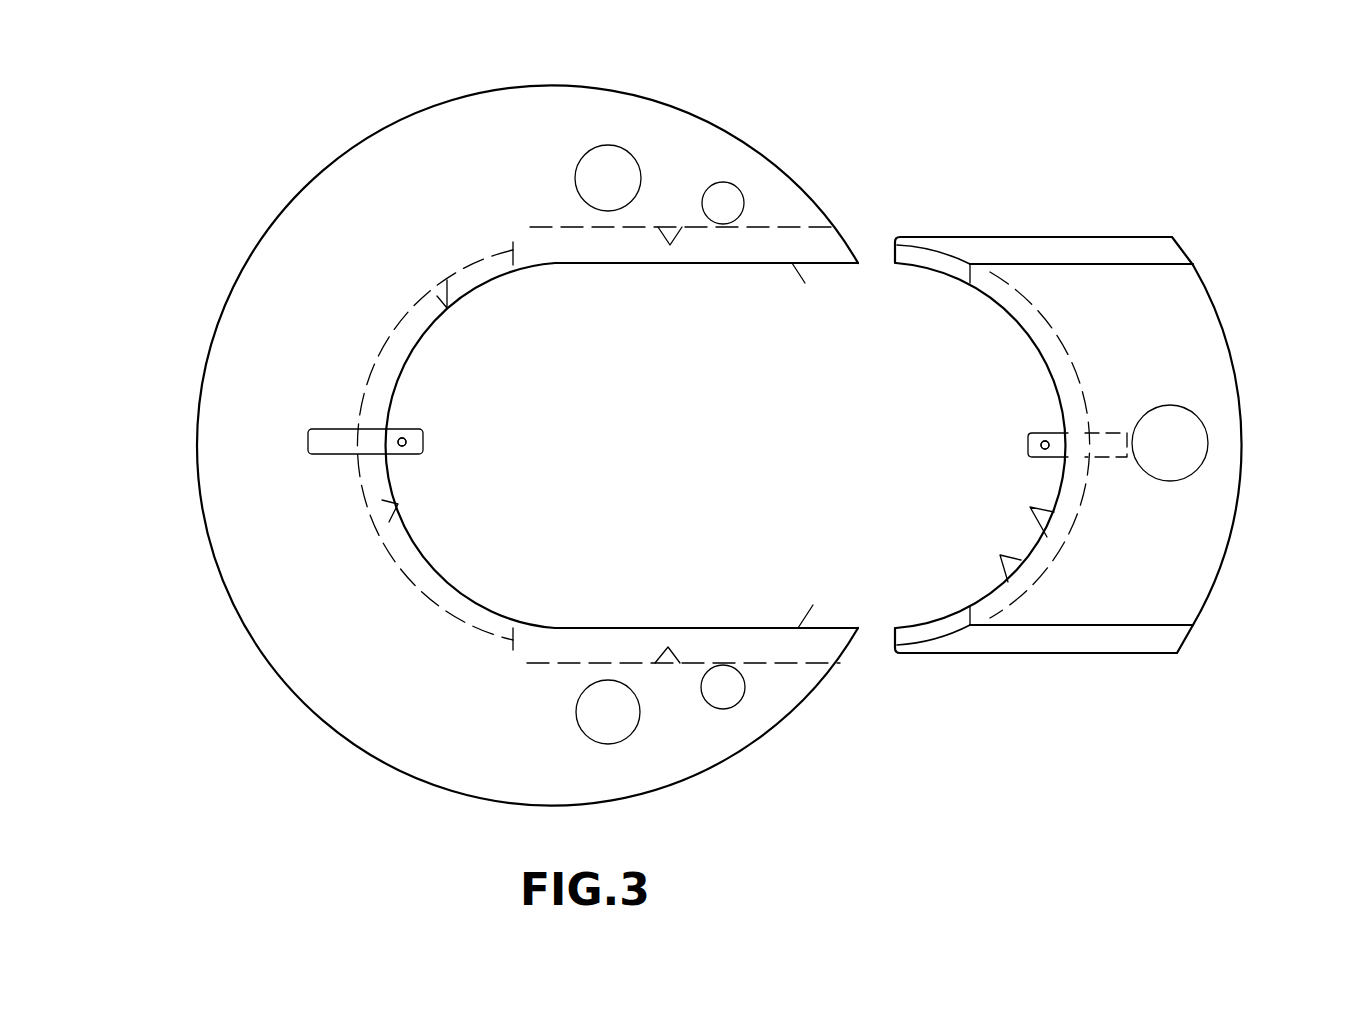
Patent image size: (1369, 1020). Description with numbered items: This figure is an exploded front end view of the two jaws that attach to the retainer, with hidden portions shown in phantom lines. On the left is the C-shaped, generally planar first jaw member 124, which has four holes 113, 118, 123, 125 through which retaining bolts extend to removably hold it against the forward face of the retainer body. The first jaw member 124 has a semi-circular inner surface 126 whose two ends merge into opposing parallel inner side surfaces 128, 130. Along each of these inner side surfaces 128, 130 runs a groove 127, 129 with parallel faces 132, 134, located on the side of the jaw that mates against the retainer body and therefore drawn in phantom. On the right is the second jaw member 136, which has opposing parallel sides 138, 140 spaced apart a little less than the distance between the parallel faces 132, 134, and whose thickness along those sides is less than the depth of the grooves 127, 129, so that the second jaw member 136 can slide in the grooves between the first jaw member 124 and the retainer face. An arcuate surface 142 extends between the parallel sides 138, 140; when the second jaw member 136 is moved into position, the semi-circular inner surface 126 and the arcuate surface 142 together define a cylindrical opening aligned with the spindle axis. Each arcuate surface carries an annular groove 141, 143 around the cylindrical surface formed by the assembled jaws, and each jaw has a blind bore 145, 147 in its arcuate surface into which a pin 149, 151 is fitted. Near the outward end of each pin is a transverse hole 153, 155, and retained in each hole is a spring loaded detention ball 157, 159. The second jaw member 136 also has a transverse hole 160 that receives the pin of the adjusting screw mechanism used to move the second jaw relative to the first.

The hole 113 is at (615, 146).
The hole 118 is at (737, 186).
The hole 123 is at (735, 705).
The first jaw member 124 is at (338, 738).
The hole 125 is at (578, 728).
The semi-circular inner surface 126 is at (398, 506).
The groove 127 is at (780, 653).
The inner side surface 128 is at (813, 605).
The groove 129 is at (537, 233).
The inner side surface 130 is at (805, 283).
The parallel face 132 is at (683, 680).
The parallel face 134 is at (687, 220).
The second jaw member 136 is at (1168, 653).
The parallel side 138 is at (990, 653).
The parallel side 140 is at (995, 237).
The annular groove 141 is at (427, 293).
The arcuate surface 142 is at (997, 558).
The annular groove 143 is at (1050, 525).
The blind bore 145 is at (330, 452).
The blind bore 147 is at (1135, 415).
The pin 149 is at (398, 438).
The pin 151 is at (1048, 440).
The transverse hole 153 is at (398, 441).
The transverse hole 155 is at (1058, 450).
The spring loaded detention ball 157 is at (398, 445).
The spring loaded detention ball 159 is at (1050, 446).
The transverse hole 160 is at (1185, 432).